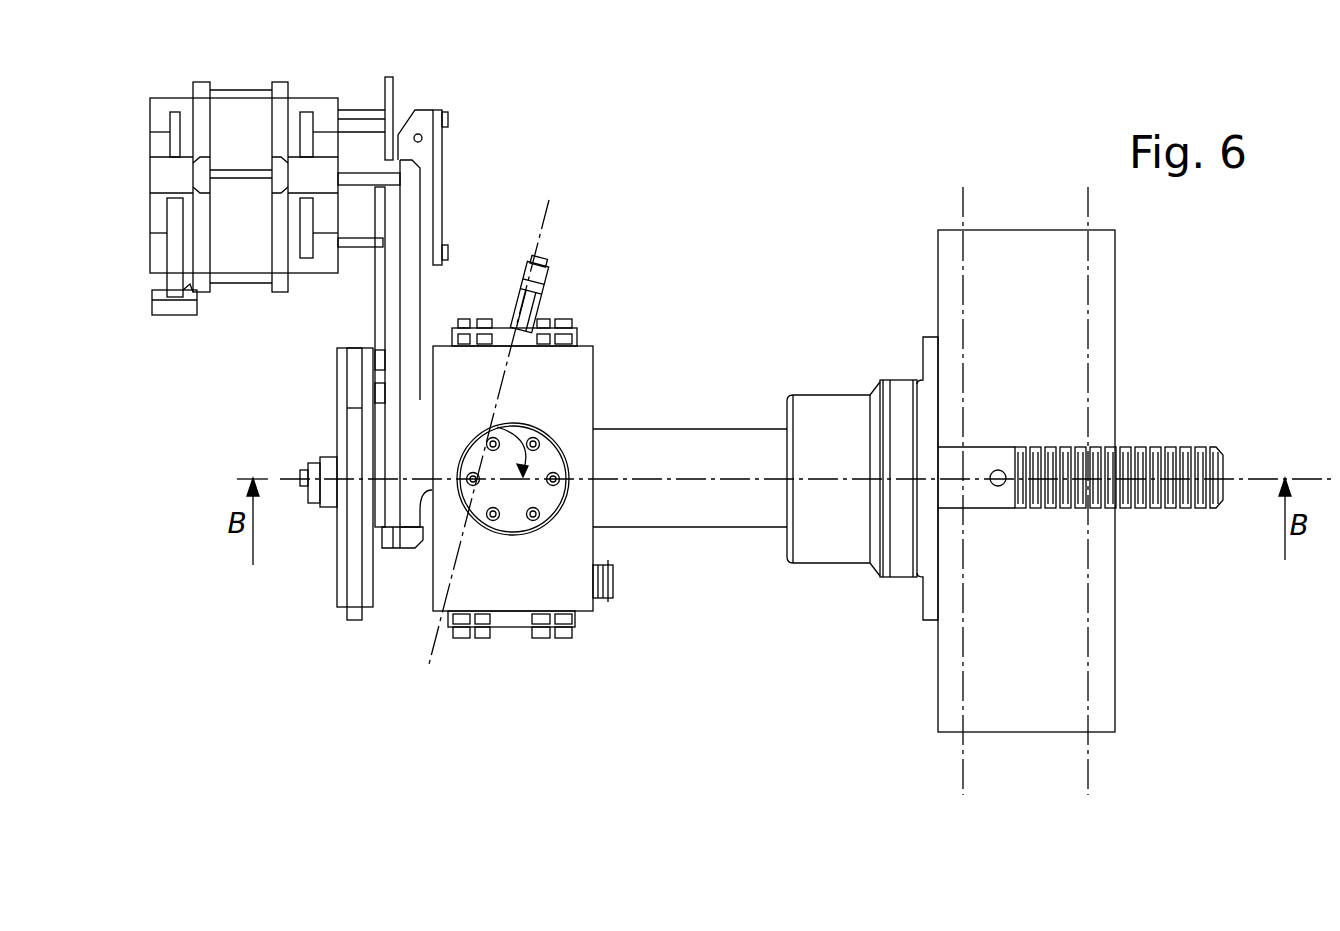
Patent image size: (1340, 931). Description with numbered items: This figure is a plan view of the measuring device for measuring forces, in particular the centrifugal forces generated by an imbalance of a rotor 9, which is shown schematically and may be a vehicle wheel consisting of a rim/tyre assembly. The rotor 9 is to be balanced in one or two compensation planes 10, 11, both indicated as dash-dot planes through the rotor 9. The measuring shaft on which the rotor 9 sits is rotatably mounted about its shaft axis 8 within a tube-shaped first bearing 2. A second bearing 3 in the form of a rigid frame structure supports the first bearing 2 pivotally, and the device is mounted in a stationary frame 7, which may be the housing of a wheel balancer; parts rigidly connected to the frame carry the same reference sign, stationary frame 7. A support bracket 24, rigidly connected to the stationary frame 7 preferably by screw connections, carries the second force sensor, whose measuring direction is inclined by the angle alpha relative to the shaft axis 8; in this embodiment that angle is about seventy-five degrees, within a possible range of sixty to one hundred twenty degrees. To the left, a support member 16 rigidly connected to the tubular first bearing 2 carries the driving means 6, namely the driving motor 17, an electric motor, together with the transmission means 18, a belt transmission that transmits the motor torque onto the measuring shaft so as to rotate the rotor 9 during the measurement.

The first bearing 2 is at (748, 438).
The second bearing 3 is at (583, 403).
The driving means 6 is at (250, 327).
The stationary frame 7 is at (553, 318).
The shaft axis 8 is at (658, 480).
The rotor 9 is at (1045, 712).
The compensation plane 10 is at (962, 260).
The compensation plane 11 is at (1090, 402).
The support member 16 is at (412, 243).
The driving motor 17 is at (252, 117).
The transmission means 18 is at (357, 372).
The support bracket 24 is at (515, 287).